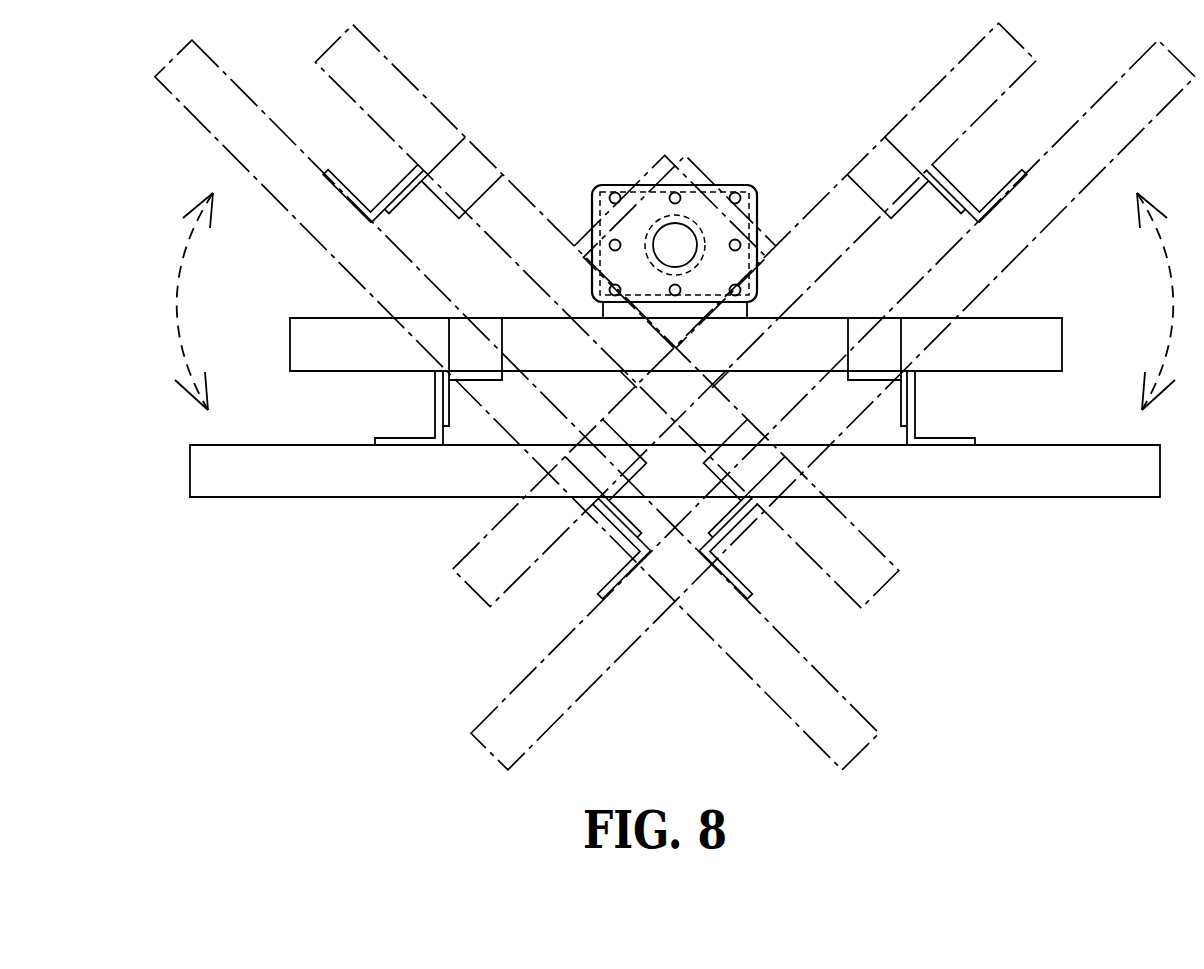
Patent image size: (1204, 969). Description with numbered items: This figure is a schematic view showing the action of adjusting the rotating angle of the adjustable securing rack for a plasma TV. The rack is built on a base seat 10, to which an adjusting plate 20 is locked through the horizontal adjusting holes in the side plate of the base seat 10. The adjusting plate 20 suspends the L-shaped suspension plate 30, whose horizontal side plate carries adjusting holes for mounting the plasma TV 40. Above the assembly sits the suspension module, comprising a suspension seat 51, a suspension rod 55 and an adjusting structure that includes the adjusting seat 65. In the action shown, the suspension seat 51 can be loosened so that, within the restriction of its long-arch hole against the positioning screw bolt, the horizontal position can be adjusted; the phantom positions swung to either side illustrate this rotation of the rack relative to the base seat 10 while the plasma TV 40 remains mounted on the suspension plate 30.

The base seat 10 is at (1040, 318).
The adjusting plate 20 is at (900, 414).
The suspension plate 30 is at (916, 407).
The plasma TV 40 is at (231, 498).
The suspension seat 51 is at (740, 185).
The suspension rod 55 is at (655, 222).
The adjusting seat 65 is at (603, 311).